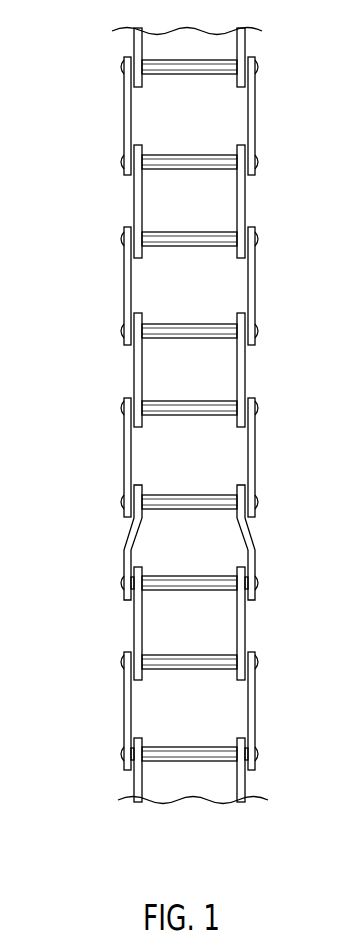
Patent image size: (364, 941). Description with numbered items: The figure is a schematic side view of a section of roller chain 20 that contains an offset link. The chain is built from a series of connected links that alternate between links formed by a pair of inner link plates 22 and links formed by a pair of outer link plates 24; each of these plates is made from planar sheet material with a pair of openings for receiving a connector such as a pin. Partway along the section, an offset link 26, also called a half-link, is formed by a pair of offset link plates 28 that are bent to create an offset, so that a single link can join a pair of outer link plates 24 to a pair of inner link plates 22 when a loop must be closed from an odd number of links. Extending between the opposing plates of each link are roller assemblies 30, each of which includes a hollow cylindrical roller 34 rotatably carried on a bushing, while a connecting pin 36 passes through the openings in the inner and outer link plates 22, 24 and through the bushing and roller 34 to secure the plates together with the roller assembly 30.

The roller chain 20 is at (192, 416).
The inner link plates 22 is at (134, 210).
The outer link plates 24 is at (124, 282).
The offset link 26 is at (186, 533).
The offset link plates 28 is at (126, 553).
The roller assemblies 30 is at (166, 609).
The roller 34 is at (211, 592).
The connecting pin 36 is at (259, 755).